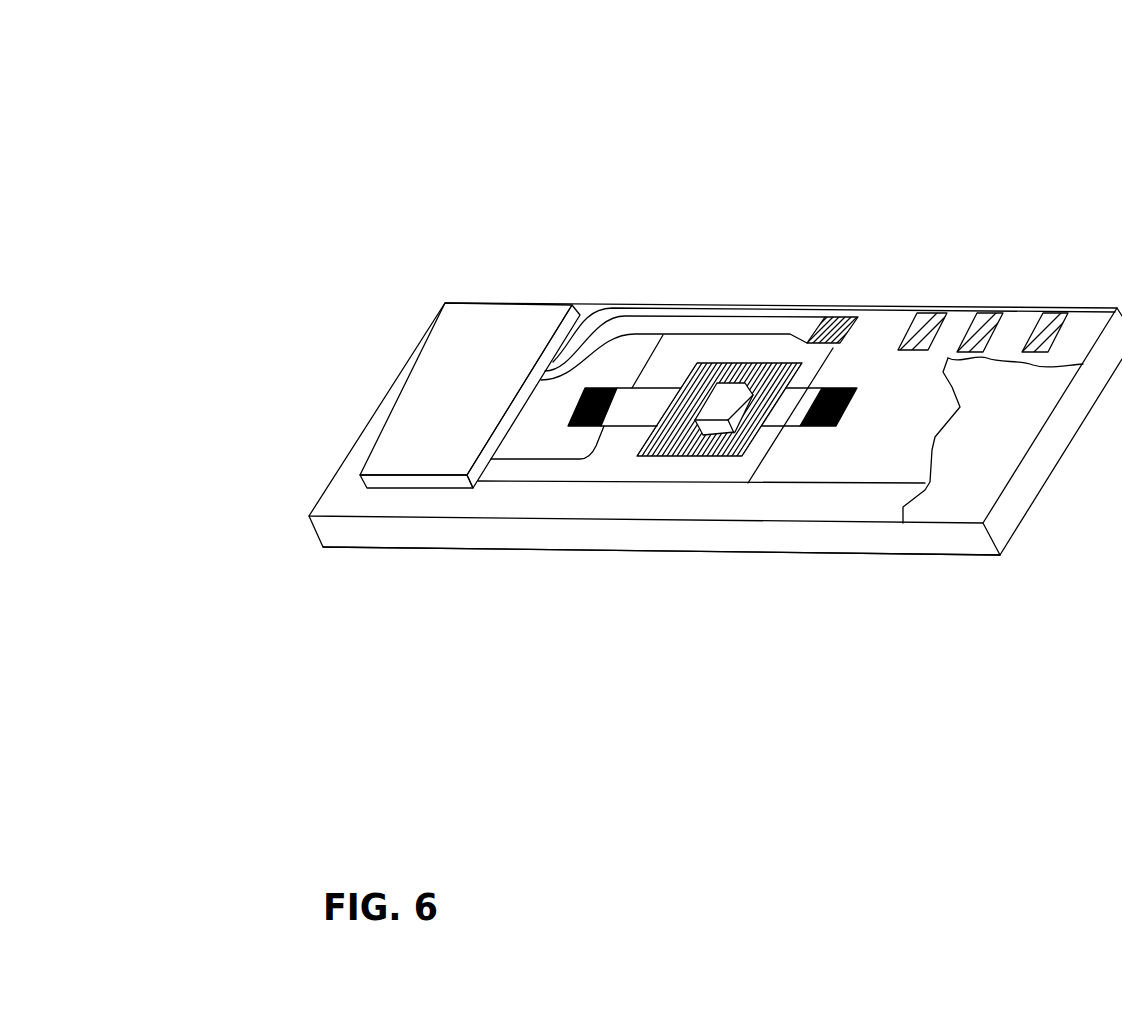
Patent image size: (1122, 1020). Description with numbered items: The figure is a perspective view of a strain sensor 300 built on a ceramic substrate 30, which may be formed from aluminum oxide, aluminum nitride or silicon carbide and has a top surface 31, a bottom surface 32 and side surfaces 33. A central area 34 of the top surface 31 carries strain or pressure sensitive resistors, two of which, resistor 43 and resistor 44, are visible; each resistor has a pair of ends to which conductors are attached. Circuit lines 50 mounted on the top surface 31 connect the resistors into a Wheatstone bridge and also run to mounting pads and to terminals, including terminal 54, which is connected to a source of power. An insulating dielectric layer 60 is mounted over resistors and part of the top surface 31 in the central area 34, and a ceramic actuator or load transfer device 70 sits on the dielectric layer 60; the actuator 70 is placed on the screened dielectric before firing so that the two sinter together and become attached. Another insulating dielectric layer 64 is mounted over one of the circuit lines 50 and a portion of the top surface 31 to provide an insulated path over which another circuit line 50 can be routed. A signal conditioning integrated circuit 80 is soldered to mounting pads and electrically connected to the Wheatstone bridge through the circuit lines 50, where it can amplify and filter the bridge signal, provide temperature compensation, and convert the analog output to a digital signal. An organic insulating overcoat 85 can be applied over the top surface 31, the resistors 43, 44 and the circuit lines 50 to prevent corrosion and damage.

The strain sensor 300 is at (477, 89).
The ceramic substrate 30 is at (312, 475).
The top surface 31 is at (358, 507).
The bottom surface 32 is at (561, 552).
The side surfaces 33 is at (485, 533).
The central area 34 is at (663, 473).
The resistor 43 is at (572, 412).
The resistor 44 is at (843, 412).
The circuit lines 50 is at (600, 311).
The terminal 54 is at (932, 312).
The insulating dielectric layer 60 is at (703, 458).
The insulating dielectric layer 64 is at (858, 317).
The ceramic actuator 70 is at (727, 397).
The integrated circuit 80 is at (478, 340).
The overcoat 85 is at (1008, 440).